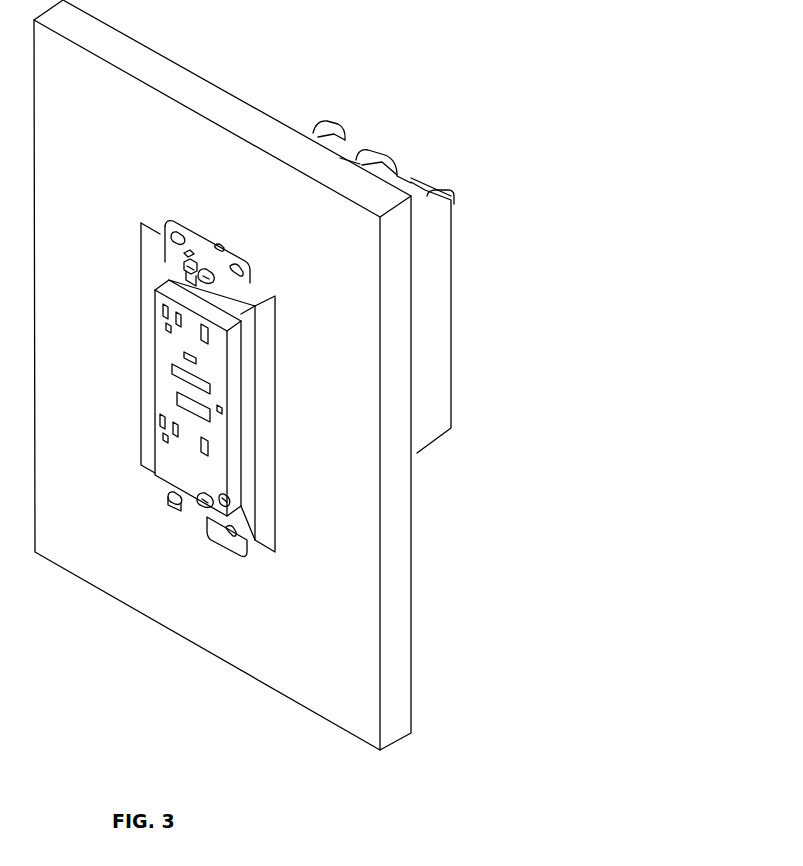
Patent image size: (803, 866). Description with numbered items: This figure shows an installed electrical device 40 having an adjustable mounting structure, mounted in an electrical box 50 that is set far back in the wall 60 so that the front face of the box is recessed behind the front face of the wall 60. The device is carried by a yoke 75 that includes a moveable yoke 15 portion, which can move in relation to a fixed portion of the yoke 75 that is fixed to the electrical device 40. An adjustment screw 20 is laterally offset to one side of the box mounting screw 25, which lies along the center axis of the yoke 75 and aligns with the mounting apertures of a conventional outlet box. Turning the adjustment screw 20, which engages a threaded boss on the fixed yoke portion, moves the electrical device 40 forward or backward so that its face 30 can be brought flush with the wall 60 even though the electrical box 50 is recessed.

The moveable yoke portion 15 is at (178, 232).
The adjustment screw 20 is at (193, 268).
The box mounting screw 25 is at (207, 273).
The face of the electrical device 30 is at (210, 365).
The electrical device 40 is at (237, 447).
The electrical box 50 is at (252, 481).
The wall 60 is at (320, 265).
The yoke 75 is at (263, 245).